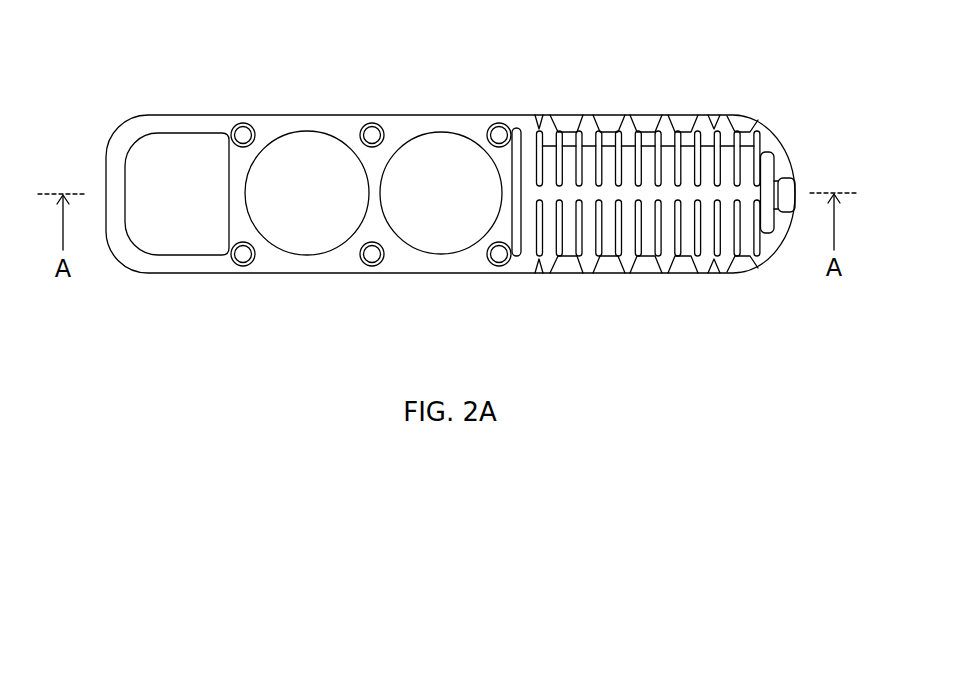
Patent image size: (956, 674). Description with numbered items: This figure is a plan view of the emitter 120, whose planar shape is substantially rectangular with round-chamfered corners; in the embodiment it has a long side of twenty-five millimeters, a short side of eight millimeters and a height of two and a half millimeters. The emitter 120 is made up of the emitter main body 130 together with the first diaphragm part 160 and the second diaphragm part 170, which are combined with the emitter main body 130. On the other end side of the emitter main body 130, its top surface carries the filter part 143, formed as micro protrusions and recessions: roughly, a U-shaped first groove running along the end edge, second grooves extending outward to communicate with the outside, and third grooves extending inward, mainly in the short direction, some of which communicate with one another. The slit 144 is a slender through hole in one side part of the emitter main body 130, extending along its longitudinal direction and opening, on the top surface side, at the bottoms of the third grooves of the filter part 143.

The emitter 120 is at (776, 71).
The emitter main body 130 is at (177, 115).
The second diaphragm part 170 is at (293, 132).
The first diaphragm part 160 is at (420, 133).
The slit 144 is at (538, 140).
The filter part 143 is at (664, 192).